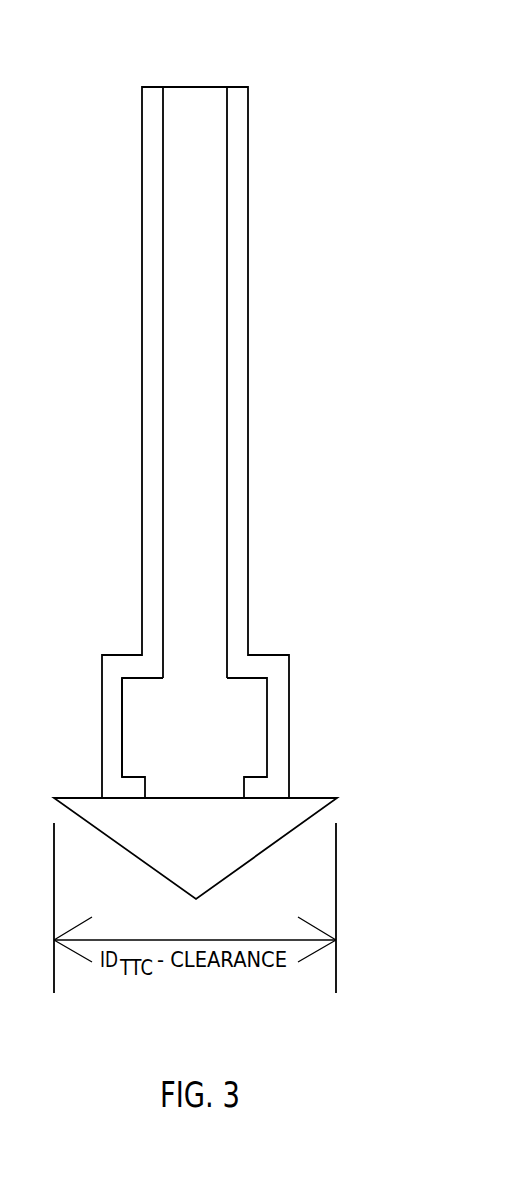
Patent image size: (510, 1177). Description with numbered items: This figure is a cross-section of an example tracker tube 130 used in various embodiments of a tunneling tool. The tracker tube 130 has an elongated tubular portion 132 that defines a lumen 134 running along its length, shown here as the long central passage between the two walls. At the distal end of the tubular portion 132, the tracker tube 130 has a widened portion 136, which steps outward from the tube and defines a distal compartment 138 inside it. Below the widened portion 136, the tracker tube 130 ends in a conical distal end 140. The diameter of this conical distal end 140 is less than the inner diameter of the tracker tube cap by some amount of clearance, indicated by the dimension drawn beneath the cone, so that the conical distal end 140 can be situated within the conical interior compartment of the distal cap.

The tracker tube 130 is at (255, 457).
The tubular portion 132 is at (249, 292).
The lumen 134 is at (195, 98).
The widened portion 136 is at (268, 707).
The distal compartment 138 is at (227, 730).
The conical distal end 140 is at (300, 810).